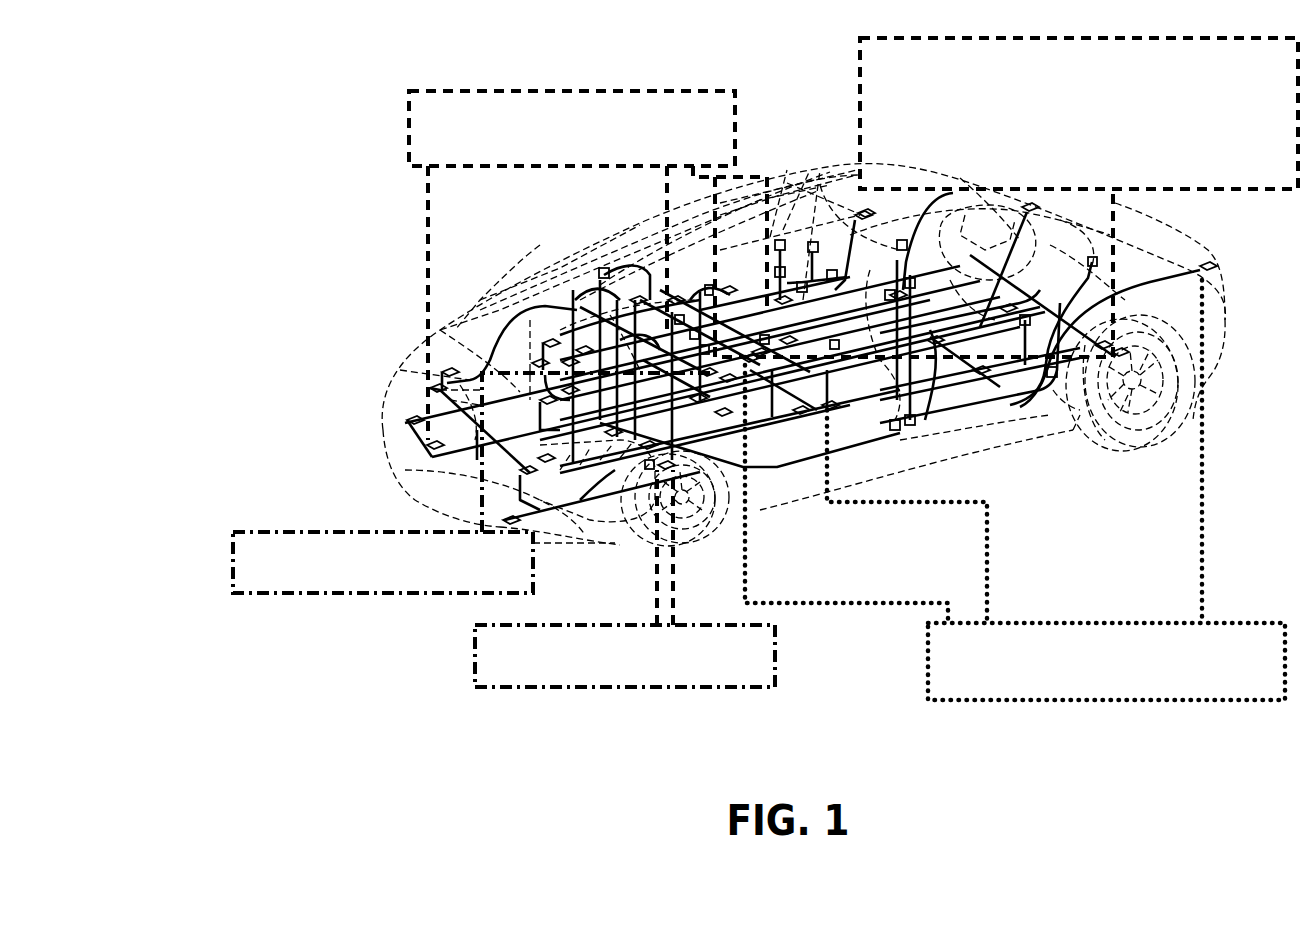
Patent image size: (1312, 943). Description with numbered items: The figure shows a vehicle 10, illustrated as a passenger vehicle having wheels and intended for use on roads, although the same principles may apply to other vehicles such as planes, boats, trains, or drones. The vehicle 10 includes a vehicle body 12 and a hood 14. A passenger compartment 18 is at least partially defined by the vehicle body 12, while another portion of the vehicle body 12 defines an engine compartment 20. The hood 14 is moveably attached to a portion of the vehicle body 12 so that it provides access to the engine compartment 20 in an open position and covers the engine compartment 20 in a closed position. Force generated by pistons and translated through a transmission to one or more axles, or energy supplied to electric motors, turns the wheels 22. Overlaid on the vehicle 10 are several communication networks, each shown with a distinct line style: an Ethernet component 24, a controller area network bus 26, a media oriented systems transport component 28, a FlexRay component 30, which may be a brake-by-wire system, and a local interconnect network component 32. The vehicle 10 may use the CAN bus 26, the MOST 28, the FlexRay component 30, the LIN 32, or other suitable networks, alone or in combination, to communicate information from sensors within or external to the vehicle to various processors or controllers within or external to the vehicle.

The vehicle 10 is at (208, 181).
The vehicle body 12 is at (768, 300).
The hood 14 is at (520, 312).
The passenger compartment 18 is at (686, 256).
The engine compartment 20 is at (367, 372).
The wheels 22 is at (642, 528).
The Ethernet component 24 is at (213, 555).
The controller area network (CAN) bus 26 is at (396, 120).
The media oriented systems transport component (MOST) 28 is at (845, 103).
The FlexRay component 30 is at (453, 651).
The local interconnect network component (LIN) 32 is at (914, 648).